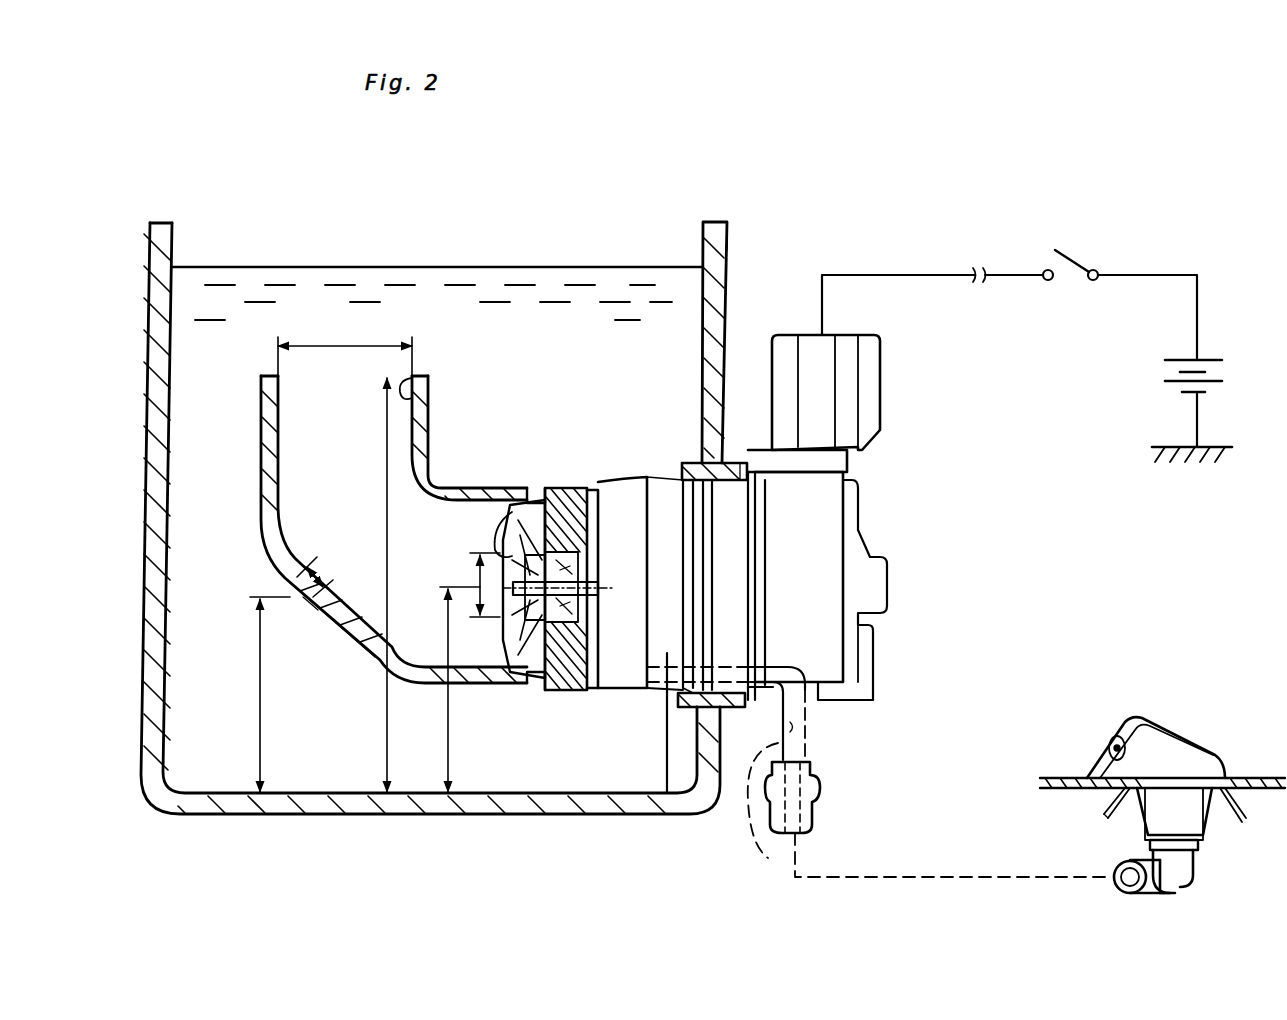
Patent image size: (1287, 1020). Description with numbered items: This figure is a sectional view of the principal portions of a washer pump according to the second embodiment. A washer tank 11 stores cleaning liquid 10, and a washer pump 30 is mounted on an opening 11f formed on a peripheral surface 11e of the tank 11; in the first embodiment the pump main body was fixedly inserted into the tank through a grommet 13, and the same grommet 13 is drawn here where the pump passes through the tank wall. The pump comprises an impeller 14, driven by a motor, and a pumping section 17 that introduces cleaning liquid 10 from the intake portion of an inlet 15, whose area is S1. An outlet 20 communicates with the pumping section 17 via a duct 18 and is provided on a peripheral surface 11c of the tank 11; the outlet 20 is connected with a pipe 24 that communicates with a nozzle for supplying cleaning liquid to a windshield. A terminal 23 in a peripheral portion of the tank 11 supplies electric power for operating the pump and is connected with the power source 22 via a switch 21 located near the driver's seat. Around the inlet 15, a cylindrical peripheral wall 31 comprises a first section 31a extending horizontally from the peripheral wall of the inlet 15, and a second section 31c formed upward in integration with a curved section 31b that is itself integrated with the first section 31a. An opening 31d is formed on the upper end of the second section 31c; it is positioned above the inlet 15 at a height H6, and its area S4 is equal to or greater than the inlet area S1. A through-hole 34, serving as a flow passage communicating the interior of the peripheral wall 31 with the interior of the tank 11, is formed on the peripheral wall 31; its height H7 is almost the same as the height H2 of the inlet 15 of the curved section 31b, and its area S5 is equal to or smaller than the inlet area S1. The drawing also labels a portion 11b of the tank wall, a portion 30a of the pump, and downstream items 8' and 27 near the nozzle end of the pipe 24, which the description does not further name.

The cleaning liquid 10 is at (235, 285).
The washer tank 11 is at (150, 247).
The tank side wall 11b is at (700, 245).
The peripheral surface 11c is at (728, 243).
The peripheral surface 11e is at (745, 255).
The opening 11f is at (685, 463).
The grommet 13 is at (740, 463).
The impeller 14 is at (528, 673).
The inlet 15 is at (512, 505).
The pumping section 17 is at (547, 693).
The duct 18 is at (930, 811).
The outlet 20 is at (815, 748).
The switch 21 is at (1075, 280).
The power source 22 is at (1150, 373).
The terminal 23 is at (835, 350).
The pipe 24 is at (805, 806).
The nozzle 27 is at (1205, 835).
The nozzle mounting clip 8' is at (1097, 838).
The washer pump 30 is at (820, 522).
The motor support leg 30a is at (670, 810).
The cylindrical peripheral wall 31 is at (258, 482).
The first section 31a is at (490, 488).
The curved section 31b is at (368, 663).
The second section 31c is at (260, 395).
The opening 31d is at (412, 372).
The through-hole 34 is at (303, 597).
The area of the inlet S1 is at (475, 575).
The area of the opening S4 is at (345, 347).
The area of the through-hole S5 is at (320, 568).
The height of the inlet H2 is at (446, 689).
The height of the opening H6 is at (367, 585).
The height of the through-hole H7 is at (256, 694).